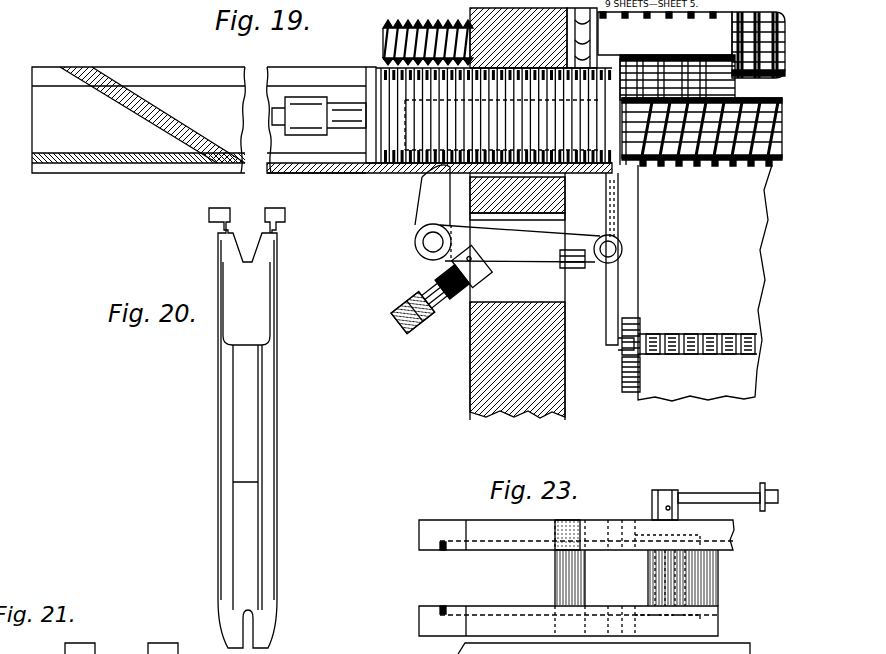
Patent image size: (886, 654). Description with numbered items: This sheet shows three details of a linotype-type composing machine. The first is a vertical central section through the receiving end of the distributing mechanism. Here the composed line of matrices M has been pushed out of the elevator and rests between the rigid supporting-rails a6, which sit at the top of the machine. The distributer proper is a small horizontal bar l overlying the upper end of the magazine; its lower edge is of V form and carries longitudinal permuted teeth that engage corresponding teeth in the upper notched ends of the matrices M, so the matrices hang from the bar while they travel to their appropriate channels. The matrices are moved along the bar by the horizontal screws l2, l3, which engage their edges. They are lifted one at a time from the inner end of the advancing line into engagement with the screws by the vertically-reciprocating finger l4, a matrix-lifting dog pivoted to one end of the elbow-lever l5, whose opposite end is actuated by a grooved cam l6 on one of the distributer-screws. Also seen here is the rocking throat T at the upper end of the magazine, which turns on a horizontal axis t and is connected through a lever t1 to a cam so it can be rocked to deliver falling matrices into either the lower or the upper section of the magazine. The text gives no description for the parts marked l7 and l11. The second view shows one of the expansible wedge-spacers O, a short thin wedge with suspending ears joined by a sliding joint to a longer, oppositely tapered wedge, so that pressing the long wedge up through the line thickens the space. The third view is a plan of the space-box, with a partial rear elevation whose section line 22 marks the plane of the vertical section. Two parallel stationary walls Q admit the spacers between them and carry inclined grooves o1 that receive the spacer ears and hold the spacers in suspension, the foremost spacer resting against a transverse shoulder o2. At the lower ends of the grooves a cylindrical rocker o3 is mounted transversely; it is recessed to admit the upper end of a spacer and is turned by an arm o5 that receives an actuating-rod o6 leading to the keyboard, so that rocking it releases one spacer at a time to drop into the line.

In FIG. 19, the rigid supporting-rails a6 is at (183, 115).
In FIG. 19, the spring l7 is at (384, 40).
In FIG. 19, the horizontal bar l is at (498, 368).
In FIG. 19, the horizontal screw l2 is at (776, 72).
In FIG. 19, the matrices M is at (483, 130).
In FIG. 19, the horizontal screw l3 is at (750, 167).
In FIG. 19, the vertically-reciprocating finger l4 is at (609, 207).
In FIG. 19, the elbow-lever l5 is at (518, 246).
In FIG. 19, the grooved cam l6 is at (423, 132).
In FIG. 19, the plate l11 is at (372, 130).
In FIG. 19, the rocking throat T is at (730, 271).
In FIG. 19, the lever t1 is at (627, 316).
In FIG. 19, the horizontal axis t is at (628, 378).
In FIG. 20, the expansible wedge-spacer O is at (268, 387).
In FIG. 21, the section line 22 is at (158, 620).
In FIG. 23, the parallel stationary walls Q is at (460, 510).
In FIG. 23, the inclined grooves o1 is at (443, 551).
In FIG. 23, the transverse shoulder o2 is at (556, 572).
In FIG. 23, the cylindrical rocker o3 is at (687, 582).
In FIG. 23, the arm o5 is at (718, 493).
In FIG. 23, the actuating-rod o6 is at (762, 511).